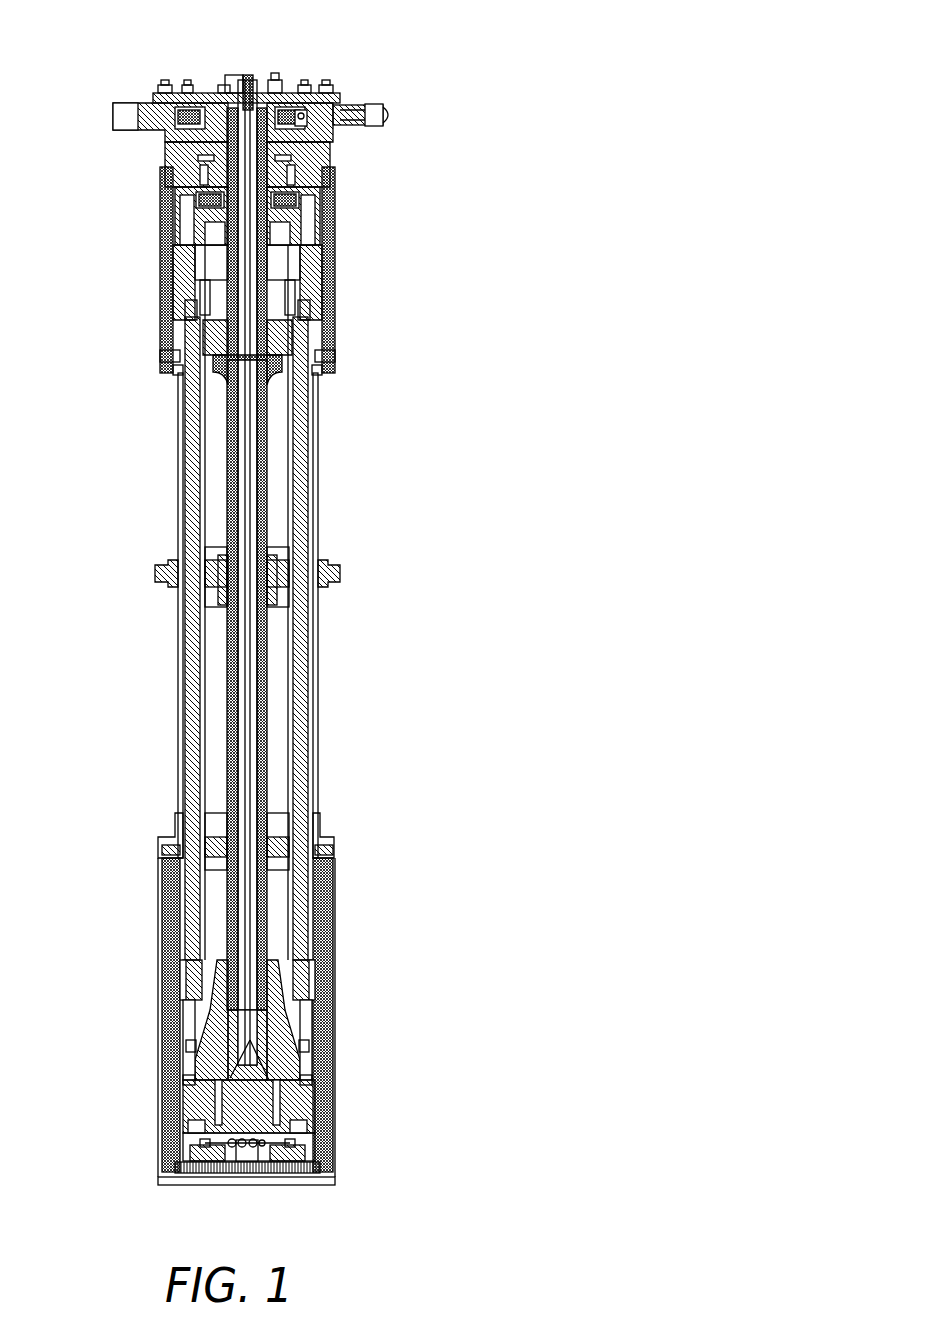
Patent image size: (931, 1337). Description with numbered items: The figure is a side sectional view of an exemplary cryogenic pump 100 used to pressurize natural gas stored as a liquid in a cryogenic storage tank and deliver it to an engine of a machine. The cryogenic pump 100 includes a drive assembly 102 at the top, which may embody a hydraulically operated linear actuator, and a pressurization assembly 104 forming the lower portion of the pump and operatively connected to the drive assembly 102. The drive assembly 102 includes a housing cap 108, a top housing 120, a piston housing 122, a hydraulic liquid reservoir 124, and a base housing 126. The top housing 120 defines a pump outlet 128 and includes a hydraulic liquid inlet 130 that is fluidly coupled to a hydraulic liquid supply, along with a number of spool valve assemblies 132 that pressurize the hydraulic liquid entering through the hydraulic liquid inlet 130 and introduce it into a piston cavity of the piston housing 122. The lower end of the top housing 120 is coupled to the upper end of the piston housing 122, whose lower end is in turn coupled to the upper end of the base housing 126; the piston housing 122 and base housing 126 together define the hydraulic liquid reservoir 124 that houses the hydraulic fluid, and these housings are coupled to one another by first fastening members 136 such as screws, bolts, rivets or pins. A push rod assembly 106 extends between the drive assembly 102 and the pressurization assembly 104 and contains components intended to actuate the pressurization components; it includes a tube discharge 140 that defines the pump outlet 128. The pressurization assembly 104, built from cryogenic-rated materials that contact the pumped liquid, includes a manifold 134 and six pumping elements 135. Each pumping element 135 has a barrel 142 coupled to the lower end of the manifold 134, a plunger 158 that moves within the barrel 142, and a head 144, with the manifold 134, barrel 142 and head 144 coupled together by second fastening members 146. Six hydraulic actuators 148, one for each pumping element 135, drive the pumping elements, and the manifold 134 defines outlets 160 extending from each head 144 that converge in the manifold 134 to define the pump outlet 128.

The cryogenic pump 100 is at (515, 45).
The drive assembly 102 is at (97, 95).
The pressurization assembly 104 is at (131, 1028).
The push rod assembly 106 is at (152, 277).
The housing cap 108 is at (155, 90).
The top housing 120 is at (155, 157).
The piston housing 122 is at (158, 196).
The hydraulic liquid reservoir 124 is at (178, 268).
The base housing 126 is at (337, 316).
The pump outlet 128 is at (233, 75).
The hydraulic liquid inlet 130 is at (400, 116).
The spool valve assemblies 132 is at (340, 130).
The manifold 134 is at (272, 1000).
The pumping elements 135 is at (342, 1070).
The first fastening members 136 is at (337, 345).
The tube discharge 140 is at (268, 527).
The barrel 142 is at (325, 1132).
The head 144 is at (315, 1155).
The second fastening members 146 is at (320, 1108).
The hydraulic actuators 148 is at (322, 200).
The plunger 158 is at (312, 1085).
The outlets 160 is at (265, 1055).